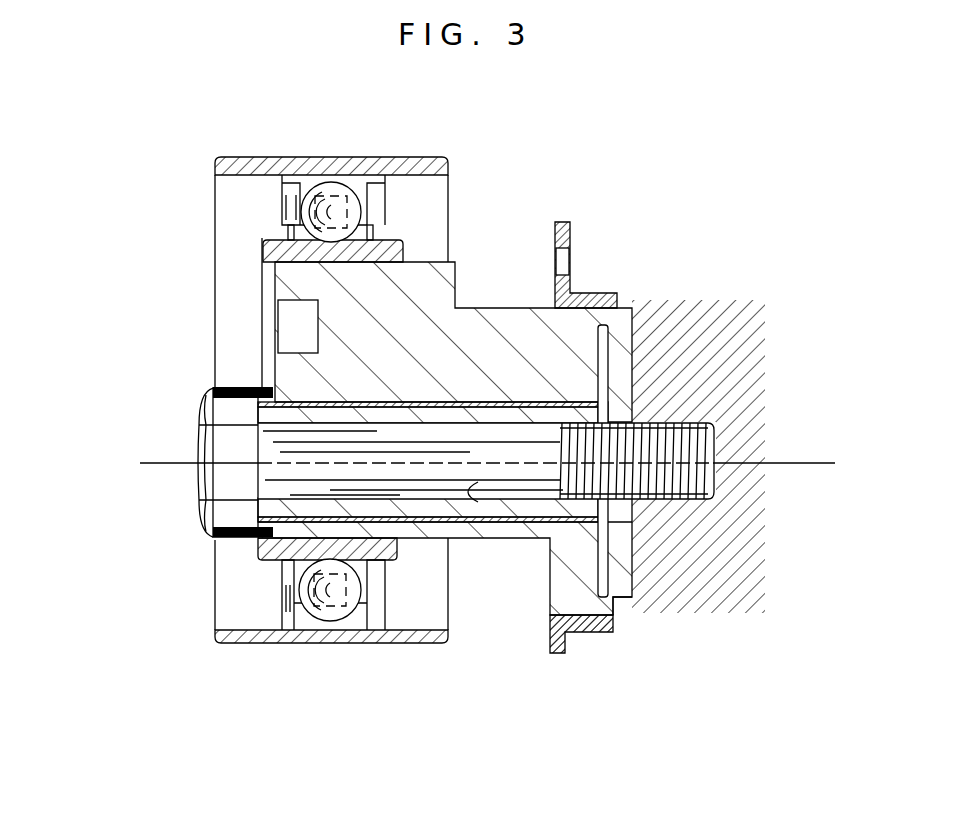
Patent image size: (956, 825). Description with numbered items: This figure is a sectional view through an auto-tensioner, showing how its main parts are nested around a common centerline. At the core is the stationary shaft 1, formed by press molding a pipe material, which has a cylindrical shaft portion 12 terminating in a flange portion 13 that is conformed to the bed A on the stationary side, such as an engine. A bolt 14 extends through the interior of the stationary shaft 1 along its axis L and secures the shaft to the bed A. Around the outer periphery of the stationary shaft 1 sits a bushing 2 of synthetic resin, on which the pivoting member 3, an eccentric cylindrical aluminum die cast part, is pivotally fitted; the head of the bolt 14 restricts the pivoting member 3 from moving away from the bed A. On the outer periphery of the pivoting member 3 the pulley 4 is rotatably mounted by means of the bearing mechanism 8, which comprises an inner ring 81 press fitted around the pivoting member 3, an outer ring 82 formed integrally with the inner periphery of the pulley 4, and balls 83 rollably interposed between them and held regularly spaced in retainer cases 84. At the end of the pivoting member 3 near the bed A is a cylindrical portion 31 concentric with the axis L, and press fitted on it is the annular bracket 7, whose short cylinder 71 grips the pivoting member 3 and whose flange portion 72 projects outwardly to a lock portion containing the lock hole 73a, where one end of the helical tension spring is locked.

The stationary shaft 1 is at (250, 452).
The bushing 2 is at (495, 402).
The pivoting member 3 is at (418, 297).
The pulley 4 is at (360, 160).
The bracket 7 is at (606, 632).
The bearing mechanism 8 is at (275, 595).
The cylindrical shaft portion 12 is at (473, 484).
The flange portion 13 is at (618, 565).
The bolt 14 is at (292, 497).
The cylindrical portion 31 is at (567, 583).
The short cylinder 71 is at (568, 223).
The flange portion 72 is at (557, 653).
The lock hole 73a is at (572, 250).
The inner ring 81 is at (295, 247).
The outer ring 82 is at (282, 182).
The balls 83 is at (330, 200).
The retainer cases 84 is at (292, 205).
The bed A is at (710, 347).
The axis L is at (828, 463).